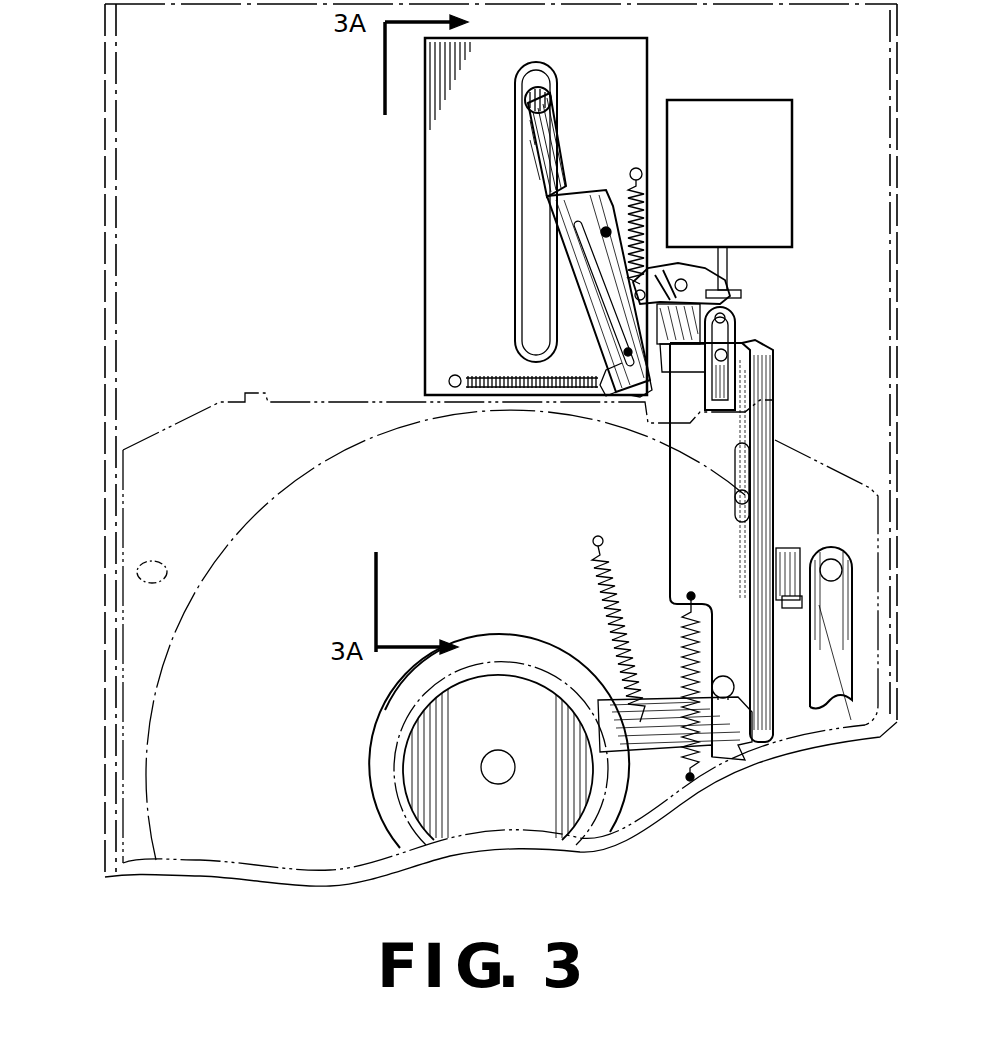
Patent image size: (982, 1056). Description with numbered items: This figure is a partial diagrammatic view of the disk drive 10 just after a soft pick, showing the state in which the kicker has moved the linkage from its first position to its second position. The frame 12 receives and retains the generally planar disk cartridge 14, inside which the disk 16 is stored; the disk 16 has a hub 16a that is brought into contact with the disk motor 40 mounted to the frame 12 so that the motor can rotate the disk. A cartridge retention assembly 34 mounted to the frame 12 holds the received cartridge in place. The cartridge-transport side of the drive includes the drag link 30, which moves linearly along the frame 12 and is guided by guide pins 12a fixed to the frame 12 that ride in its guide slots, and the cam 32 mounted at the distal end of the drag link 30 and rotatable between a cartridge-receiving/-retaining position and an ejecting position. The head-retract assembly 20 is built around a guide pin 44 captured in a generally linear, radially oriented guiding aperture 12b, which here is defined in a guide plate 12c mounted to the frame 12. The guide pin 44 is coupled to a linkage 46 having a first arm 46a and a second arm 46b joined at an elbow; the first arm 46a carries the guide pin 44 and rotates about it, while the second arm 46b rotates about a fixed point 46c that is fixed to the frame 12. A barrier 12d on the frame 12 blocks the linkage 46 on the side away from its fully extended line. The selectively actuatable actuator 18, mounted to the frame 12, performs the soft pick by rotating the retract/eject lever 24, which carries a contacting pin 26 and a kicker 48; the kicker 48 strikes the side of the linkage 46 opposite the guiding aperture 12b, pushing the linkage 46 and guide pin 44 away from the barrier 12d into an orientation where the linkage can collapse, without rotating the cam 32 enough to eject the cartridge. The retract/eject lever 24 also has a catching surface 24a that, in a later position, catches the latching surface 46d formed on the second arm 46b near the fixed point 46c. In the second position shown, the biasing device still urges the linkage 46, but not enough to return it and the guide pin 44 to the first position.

The disk drive 10 is at (191, 122).
The frame 12 is at (105, 318).
The guide pin 12a is at (752, 497).
The guiding aperture 12b is at (518, 232).
The guide plate 12c is at (472, 201).
The barrier 12d is at (604, 234).
The disk cartridge 14 is at (172, 418).
The disk 16 is at (235, 532).
The hub 16a is at (395, 720).
The actuator 18 is at (718, 156).
The head-retract assembly 20 is at (660, 60).
The retract/eject lever 24 is at (716, 299).
The catching surface 24a is at (662, 350).
The contacting pin 26 is at (728, 270).
The drag link 30 is at (722, 577).
The cam 32 is at (740, 372).
The cartridge retention assembly 34 is at (840, 637).
The disk motor 40 is at (408, 782).
The guide pin 44 is at (549, 95).
The linkage 46 is at (580, 130).
The first arm 46a is at (545, 148).
The second arm 46b is at (592, 284).
The fixed point 46c is at (624, 352).
The latching surface 46d is at (640, 397).
The kicker 48 is at (596, 192).